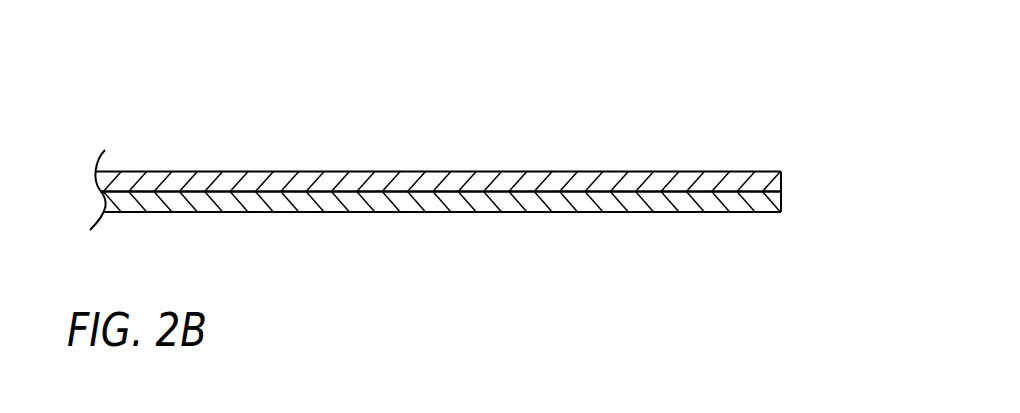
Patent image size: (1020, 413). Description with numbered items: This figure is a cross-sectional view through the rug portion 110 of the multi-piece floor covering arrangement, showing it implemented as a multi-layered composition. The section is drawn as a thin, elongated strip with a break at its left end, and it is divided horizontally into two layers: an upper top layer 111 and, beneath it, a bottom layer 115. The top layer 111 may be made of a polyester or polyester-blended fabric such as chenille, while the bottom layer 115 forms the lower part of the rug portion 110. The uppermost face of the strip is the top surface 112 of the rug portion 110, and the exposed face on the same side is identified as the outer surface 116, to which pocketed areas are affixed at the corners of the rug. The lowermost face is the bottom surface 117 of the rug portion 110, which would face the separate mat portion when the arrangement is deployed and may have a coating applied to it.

The rug portion 110 is at (652, 108).
The top layer 111 is at (447, 190).
The top surface 112 is at (280, 171).
The bottom layer 115 is at (533, 205).
The outer surface 116 is at (553, 190).
The bottom surface 117 is at (443, 212).